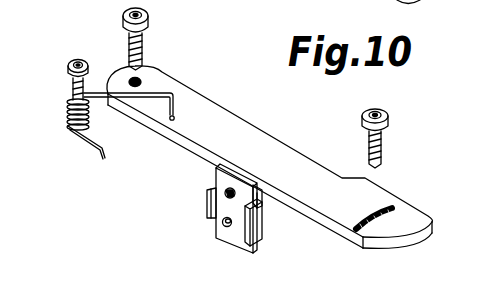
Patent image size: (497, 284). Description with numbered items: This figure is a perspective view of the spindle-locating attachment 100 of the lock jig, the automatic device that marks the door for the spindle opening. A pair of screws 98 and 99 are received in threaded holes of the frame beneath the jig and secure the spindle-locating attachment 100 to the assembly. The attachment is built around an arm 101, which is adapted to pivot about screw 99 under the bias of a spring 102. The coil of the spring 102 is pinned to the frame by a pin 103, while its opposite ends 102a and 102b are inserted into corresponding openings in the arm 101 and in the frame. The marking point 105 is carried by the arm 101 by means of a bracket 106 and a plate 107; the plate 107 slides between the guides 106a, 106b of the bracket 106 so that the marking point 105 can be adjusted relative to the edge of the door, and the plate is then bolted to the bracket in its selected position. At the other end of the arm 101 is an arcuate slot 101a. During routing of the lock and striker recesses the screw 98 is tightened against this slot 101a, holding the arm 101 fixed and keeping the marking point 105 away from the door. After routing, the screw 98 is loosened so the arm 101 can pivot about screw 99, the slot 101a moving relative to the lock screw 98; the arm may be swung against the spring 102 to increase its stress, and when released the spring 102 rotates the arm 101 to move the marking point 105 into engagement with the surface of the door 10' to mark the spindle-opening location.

The screw 98 is at (388, 124).
The screw 99 is at (123, 25).
The spindle-locating attachment 100 is at (305, 123).
The arm 101 is at (301, 162).
The slot 101a is at (392, 210).
The spring 102 is at (67, 130).
The spring end 102a is at (107, 159).
The spring end 102b is at (182, 107).
The pin 103 is at (68, 74).
The marking point 105 is at (226, 191).
The bracket 106 is at (262, 196).
The guide 106a is at (208, 213).
The guide 106b is at (259, 236).
The plate 107 is at (236, 240).
The door 10' is at (442, 17).